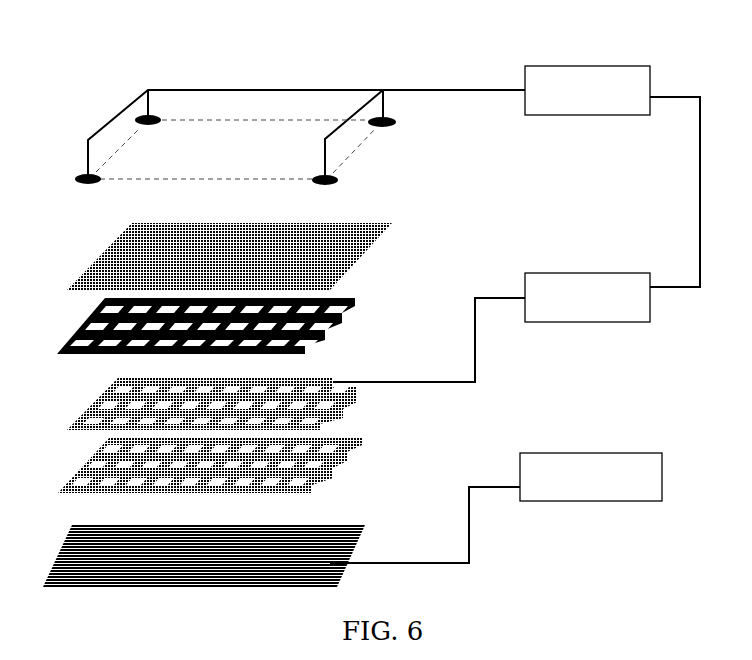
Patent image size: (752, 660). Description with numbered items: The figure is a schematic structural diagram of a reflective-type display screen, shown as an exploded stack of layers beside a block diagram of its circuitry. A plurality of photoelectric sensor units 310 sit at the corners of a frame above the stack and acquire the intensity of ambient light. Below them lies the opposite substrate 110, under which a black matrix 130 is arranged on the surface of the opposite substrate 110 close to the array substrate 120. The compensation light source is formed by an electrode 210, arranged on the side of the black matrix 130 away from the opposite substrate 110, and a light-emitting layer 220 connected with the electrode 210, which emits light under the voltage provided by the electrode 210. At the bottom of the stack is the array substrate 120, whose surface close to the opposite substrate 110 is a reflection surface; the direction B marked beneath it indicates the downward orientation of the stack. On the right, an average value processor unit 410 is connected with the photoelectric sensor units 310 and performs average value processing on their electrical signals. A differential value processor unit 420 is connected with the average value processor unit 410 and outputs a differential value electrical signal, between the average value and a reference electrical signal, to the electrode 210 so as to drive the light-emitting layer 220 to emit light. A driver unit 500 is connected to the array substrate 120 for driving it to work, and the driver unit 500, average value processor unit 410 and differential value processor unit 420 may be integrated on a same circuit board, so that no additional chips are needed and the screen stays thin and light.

The photoelectric sensor unit 310 is at (237, 143).
The opposite substrate 110 is at (229, 256).
The black matrix 130 is at (213, 326).
The electrode 210 is at (220, 404).
The light-emitting layer 220 is at (213, 465).
The array substrate 120 is at (216, 556).
The average value processor unit 410 is at (541, 176).
The differential value processor unit 420 is at (491, 327).
The driver unit 500 is at (496, 508).
The bottom direction B is at (253, 566).